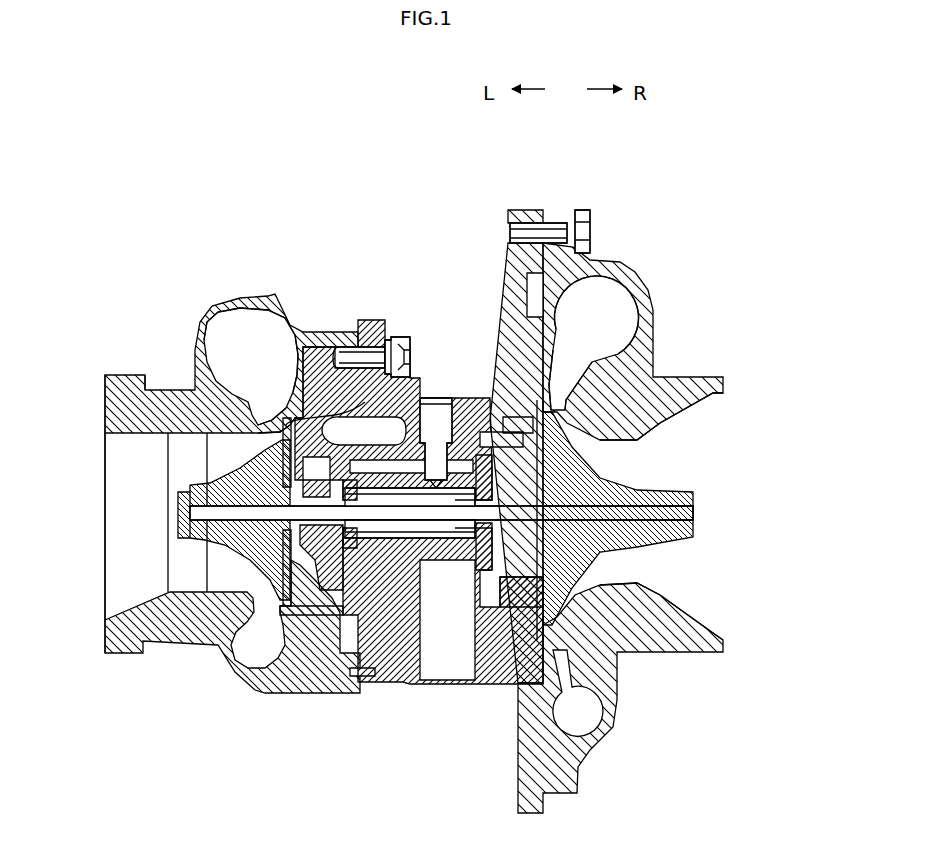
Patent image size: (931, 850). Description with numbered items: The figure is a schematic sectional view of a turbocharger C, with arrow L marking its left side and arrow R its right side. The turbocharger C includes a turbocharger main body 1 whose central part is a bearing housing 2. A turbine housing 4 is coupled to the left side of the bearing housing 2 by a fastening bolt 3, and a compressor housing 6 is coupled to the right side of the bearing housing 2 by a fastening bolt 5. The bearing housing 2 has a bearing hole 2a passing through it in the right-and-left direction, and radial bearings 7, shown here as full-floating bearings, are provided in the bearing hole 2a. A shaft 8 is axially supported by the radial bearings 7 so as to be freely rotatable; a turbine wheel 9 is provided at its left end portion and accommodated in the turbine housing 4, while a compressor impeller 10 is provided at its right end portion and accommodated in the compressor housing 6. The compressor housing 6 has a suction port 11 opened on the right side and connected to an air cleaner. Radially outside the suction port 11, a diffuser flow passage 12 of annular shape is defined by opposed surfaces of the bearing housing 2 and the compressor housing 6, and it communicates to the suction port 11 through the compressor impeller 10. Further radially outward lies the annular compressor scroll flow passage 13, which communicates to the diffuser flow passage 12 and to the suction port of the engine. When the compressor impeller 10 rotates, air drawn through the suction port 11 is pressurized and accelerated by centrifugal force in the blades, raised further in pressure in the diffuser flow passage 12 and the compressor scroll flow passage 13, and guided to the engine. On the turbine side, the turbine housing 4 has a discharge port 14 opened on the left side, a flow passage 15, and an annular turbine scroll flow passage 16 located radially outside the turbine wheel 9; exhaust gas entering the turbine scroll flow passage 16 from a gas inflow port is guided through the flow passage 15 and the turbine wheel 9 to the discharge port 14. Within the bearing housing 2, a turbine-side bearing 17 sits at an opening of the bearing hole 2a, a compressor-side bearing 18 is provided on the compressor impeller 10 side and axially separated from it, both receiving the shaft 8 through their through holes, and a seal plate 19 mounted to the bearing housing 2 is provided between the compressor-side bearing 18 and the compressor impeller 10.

The turbocharger C is at (140, 128).
The turbocharger main body 1 is at (190, 207).
The bearing housing 2 is at (468, 397).
The bearing hole 2a is at (433, 482).
The fastening bolt 3 is at (398, 340).
The turbine housing 4 is at (297, 313).
The fastening bolt 5 is at (570, 223).
The compressor housing 6 is at (692, 377).
The radial bearings 7 is at (355, 528).
The shaft 8 is at (325, 618).
The turbine wheel 9 is at (205, 545).
The compressor impeller 10 is at (630, 472).
The suction port 11 is at (690, 405).
The diffuser flow passage 12 is at (573, 345).
The compressor scroll flow passage 13 is at (610, 287).
The discharge port 14 is at (123, 418).
The flow passage 15 is at (263, 397).
The turbine scroll flow passage 16 is at (233, 330).
The turbine-side bearing 17 is at (456, 540).
The compressor-side bearing 18 is at (485, 575).
The seal plate 19 is at (525, 625).